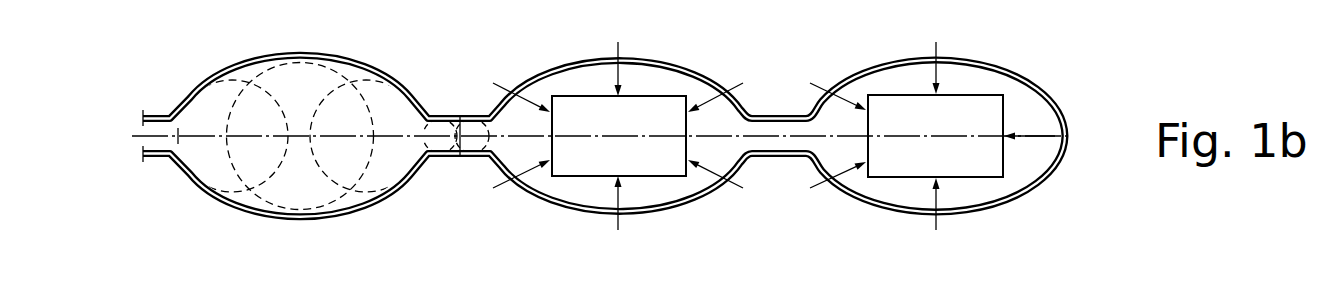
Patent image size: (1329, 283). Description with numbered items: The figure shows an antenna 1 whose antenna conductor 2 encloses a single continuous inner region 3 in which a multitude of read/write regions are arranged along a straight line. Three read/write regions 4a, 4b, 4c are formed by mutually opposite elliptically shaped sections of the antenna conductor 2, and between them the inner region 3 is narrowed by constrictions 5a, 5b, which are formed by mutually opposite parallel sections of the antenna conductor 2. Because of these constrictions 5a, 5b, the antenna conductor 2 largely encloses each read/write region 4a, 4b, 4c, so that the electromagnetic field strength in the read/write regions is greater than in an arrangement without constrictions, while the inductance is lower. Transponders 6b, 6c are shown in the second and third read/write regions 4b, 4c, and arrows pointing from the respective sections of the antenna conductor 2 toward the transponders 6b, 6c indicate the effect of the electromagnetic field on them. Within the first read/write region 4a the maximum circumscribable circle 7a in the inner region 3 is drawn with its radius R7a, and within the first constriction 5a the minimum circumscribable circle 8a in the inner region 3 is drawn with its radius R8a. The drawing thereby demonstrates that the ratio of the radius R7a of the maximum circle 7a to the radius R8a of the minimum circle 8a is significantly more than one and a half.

The antenna 1 is at (601, 138).
The antenna conductor 2 is at (397, 186).
The inner region 3 is at (655, 88).
The read/write region 4a is at (373, 180).
The read/write region 4b is at (595, 182).
The read/write region 4c is at (910, 182).
The constriction 5a is at (450, 153).
The constriction 5b is at (772, 145).
The transponder 6b is at (638, 162).
The transponder 6c is at (957, 162).
The maximum circumscribable circle 7a is at (341, 70).
The minimum circumscribable circle 8a is at (465, 117).
The radius of the maximum circle R7a is at (304, 140).
The radius of the minimum circle R8a is at (447, 108).